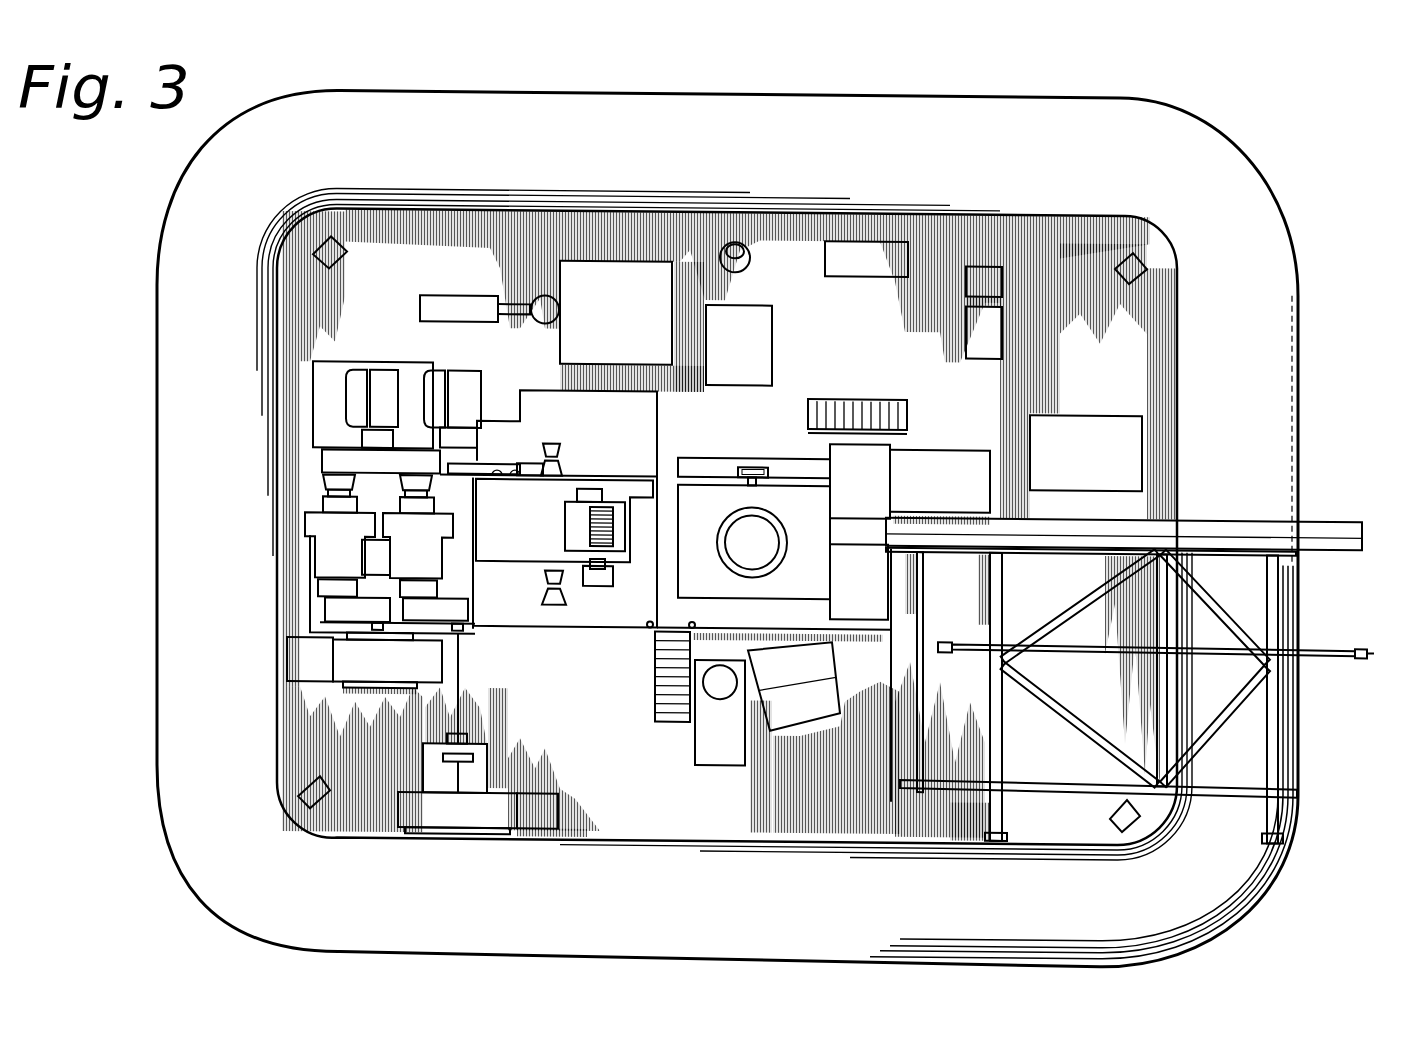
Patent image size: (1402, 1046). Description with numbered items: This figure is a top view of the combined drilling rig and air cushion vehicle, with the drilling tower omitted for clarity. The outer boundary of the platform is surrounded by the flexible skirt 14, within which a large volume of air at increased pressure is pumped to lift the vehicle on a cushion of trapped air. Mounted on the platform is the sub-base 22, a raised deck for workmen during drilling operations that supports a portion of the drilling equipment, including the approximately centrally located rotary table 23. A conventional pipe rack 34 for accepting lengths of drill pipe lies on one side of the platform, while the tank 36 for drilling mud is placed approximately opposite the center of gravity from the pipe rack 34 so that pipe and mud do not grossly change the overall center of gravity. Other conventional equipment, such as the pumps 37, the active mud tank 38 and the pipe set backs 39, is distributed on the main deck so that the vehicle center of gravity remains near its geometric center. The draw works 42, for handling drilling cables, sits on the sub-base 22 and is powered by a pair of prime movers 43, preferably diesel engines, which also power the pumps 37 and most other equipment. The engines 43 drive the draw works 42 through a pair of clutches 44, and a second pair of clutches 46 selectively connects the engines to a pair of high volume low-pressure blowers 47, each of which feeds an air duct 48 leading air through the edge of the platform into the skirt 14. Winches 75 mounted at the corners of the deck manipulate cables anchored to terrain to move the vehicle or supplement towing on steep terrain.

The flexible skirt 14 is at (1299, 360).
The sub-base 22 is at (868, 634).
The rotary table 23 is at (778, 565).
The pipe rack 34 is at (1280, 616).
The tank for drilling mud 36 is at (626, 335).
The pumps 37 is at (456, 378).
The active mud tank 38 is at (952, 494).
The pipe set backs 39 is at (872, 494).
The draw works 42 is at (590, 523).
The prime movers 43 is at (417, 556).
The clutches 44 is at (420, 488).
The second pair of clutches 46 is at (418, 590).
The high volume low-pressure blowers 47 is at (401, 676).
The air duct 48 is at (300, 656).
The winches 75 is at (340, 243).